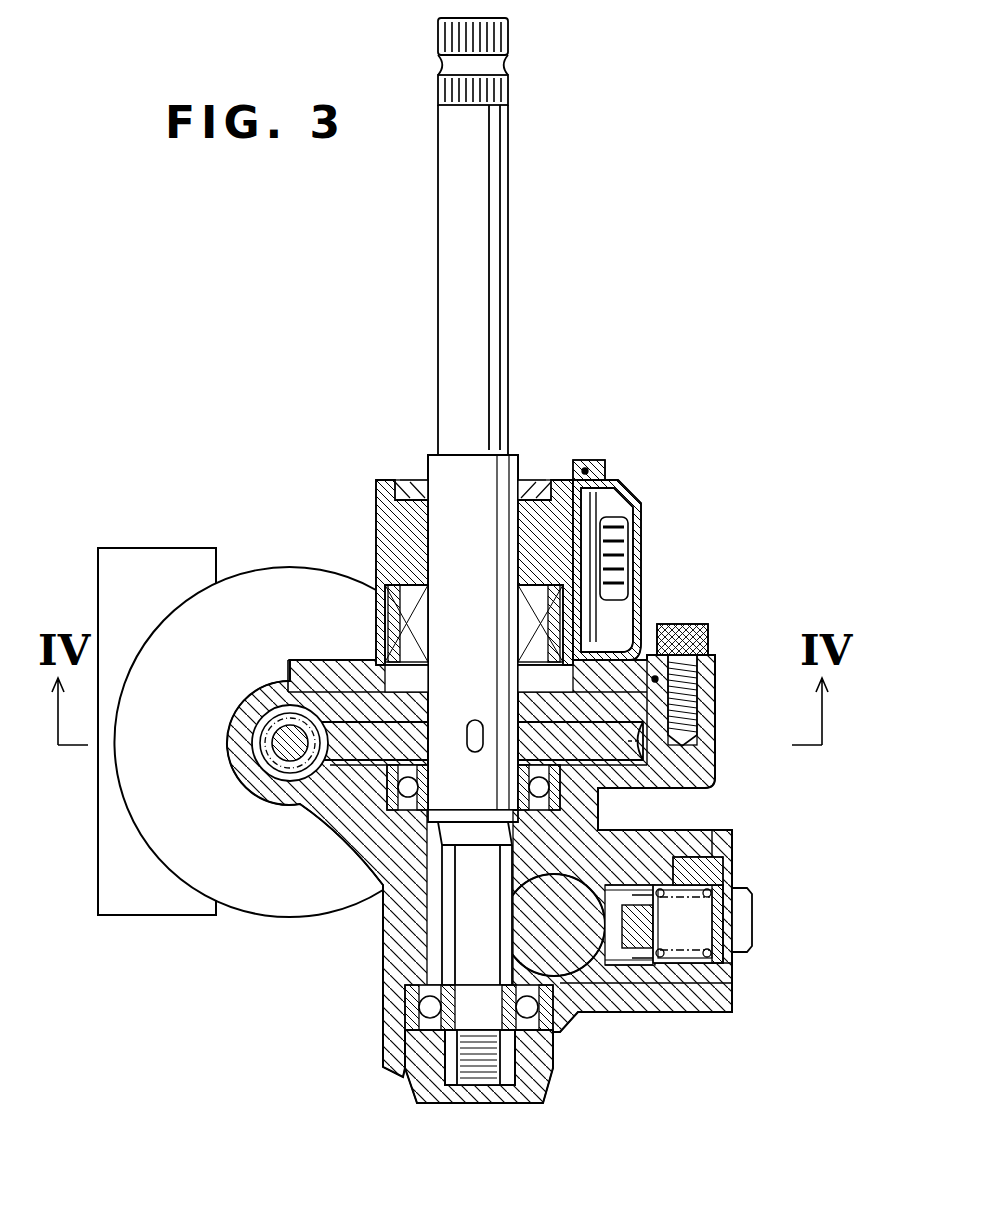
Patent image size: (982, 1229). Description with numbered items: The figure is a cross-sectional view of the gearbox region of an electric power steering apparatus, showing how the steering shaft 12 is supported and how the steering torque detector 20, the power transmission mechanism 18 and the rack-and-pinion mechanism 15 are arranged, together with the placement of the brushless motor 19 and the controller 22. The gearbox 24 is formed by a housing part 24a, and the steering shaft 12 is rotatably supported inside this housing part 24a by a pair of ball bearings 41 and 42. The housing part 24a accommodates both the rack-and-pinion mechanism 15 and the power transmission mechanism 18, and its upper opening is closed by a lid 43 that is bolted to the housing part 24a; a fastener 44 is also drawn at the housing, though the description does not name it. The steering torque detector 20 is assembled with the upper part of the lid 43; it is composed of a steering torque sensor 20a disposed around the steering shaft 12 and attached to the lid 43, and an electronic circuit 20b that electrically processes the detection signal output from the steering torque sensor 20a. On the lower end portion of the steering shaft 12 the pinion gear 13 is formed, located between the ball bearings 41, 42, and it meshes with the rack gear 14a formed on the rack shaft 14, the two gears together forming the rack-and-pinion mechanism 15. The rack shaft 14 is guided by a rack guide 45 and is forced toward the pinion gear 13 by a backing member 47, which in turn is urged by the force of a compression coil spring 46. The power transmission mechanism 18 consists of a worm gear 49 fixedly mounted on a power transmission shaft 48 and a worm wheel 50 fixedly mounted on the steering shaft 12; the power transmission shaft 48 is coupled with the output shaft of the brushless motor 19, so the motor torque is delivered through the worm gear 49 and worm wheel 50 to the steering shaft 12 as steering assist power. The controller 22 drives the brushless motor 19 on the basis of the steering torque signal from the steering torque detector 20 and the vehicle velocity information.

The steering shaft 12 is at (512, 250).
The pinion gear 13 is at (455, 1003).
The rack shaft 14 is at (680, 1010).
The rack gear 14a is at (640, 1010).
The rack-and-pinion mechanism 15 is at (445, 928).
The power transmission mechanism 18 is at (312, 778).
The brushless motor 19 is at (262, 600).
The steering torque detector 20 is at (636, 494).
The steering torque sensor 20a is at (380, 603).
The electronic circuit 20b is at (618, 555).
The controller 22 is at (150, 562).
The gearbox 24 is at (746, 840).
The housing part 24a is at (708, 764).
The ball bearing 41 is at (345, 805).
The ball bearing 42 is at (572, 1030).
The lid 43 is at (642, 656).
The fixing screw 44 is at (698, 625).
The rack guide 45 is at (698, 998).
The compression coil spring 46 is at (733, 878).
The backing member 47 is at (643, 860).
The power transmission shaft 48 is at (262, 773).
The worm gear 49 is at (258, 733).
The worm wheel 50 is at (368, 727).